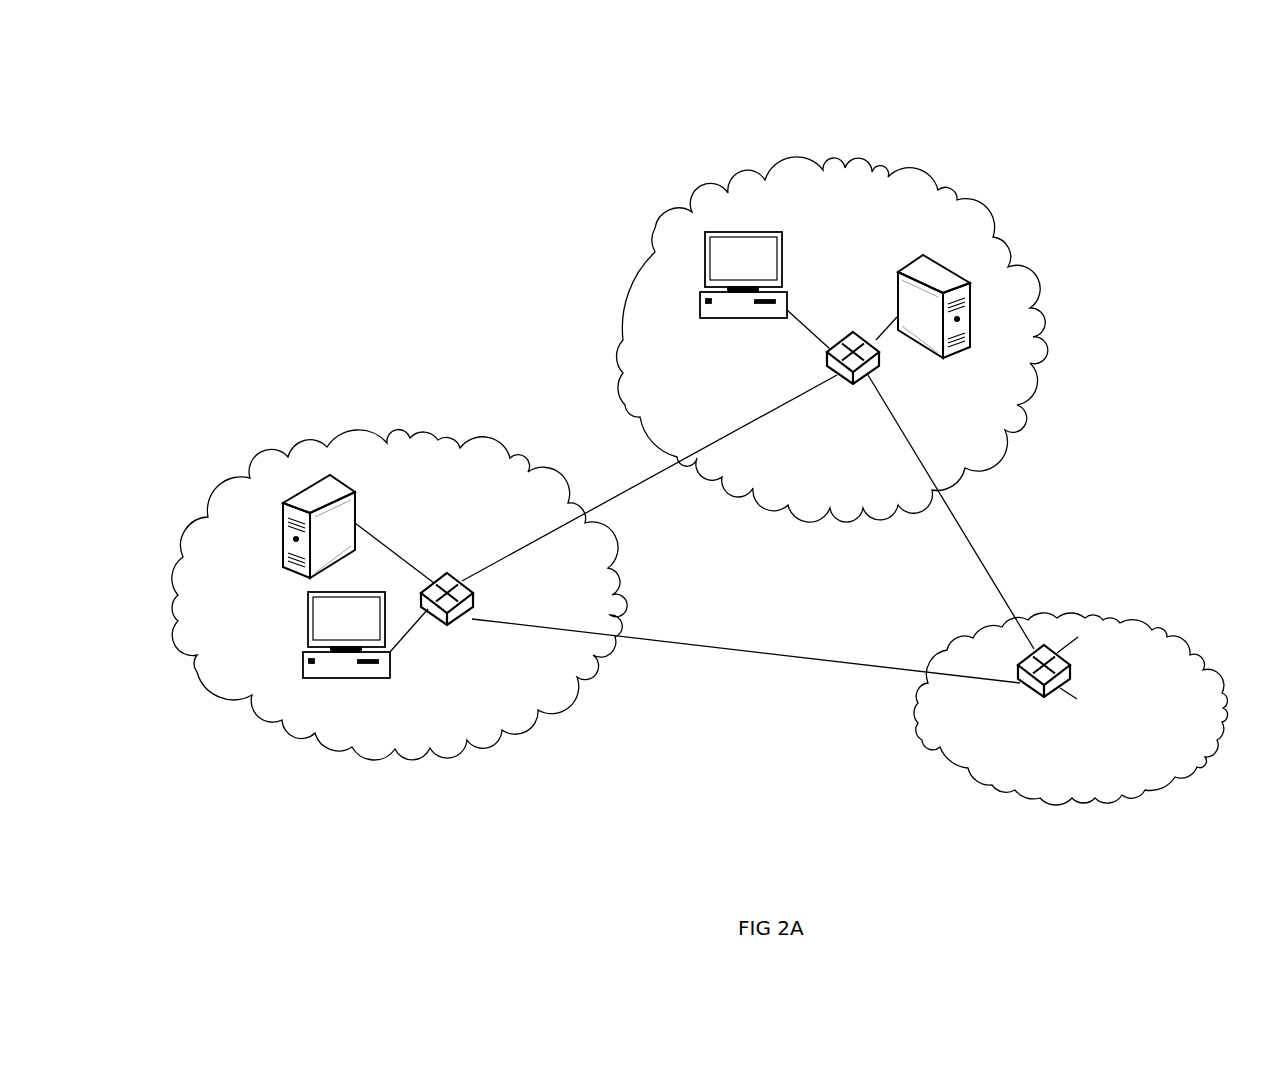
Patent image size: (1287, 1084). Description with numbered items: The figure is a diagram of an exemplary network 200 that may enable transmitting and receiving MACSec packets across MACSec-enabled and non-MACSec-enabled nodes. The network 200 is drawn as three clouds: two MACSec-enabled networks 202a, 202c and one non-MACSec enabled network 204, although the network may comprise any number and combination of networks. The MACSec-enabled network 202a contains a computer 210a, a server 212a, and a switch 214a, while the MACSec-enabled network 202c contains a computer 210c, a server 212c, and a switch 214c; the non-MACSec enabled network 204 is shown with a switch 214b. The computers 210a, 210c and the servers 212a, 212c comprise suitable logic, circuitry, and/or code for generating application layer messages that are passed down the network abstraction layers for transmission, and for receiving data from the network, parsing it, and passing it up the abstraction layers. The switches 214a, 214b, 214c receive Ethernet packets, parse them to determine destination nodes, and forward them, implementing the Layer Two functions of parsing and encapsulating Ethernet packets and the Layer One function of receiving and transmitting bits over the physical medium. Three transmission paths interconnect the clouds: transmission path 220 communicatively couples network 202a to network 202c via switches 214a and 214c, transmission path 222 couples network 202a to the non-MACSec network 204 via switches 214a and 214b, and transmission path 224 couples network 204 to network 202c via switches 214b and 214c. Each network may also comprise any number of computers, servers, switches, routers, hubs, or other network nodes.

The network 200 is at (325, 184).
The MACSec-enabled network 202a is at (360, 432).
The MACSec-enabled network 202c is at (656, 226).
The non-MACSec enabled network 204 is at (1190, 656).
The computer 210a is at (366, 678).
The computer 210c is at (712, 320).
The server 212a is at (282, 556).
The server 212c is at (895, 292).
The switch 214a is at (448, 628).
The switch 214b is at (1044, 699).
The switch 214c is at (862, 386).
The transmission path 220 is at (645, 482).
The transmission path 222 is at (733, 652).
The transmission path 224 is at (980, 560).